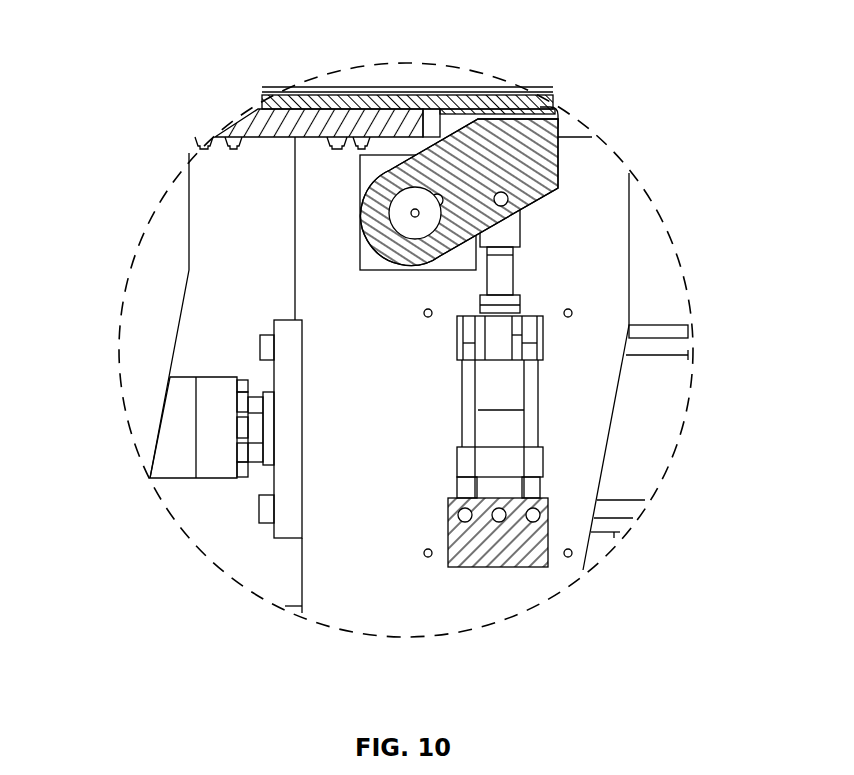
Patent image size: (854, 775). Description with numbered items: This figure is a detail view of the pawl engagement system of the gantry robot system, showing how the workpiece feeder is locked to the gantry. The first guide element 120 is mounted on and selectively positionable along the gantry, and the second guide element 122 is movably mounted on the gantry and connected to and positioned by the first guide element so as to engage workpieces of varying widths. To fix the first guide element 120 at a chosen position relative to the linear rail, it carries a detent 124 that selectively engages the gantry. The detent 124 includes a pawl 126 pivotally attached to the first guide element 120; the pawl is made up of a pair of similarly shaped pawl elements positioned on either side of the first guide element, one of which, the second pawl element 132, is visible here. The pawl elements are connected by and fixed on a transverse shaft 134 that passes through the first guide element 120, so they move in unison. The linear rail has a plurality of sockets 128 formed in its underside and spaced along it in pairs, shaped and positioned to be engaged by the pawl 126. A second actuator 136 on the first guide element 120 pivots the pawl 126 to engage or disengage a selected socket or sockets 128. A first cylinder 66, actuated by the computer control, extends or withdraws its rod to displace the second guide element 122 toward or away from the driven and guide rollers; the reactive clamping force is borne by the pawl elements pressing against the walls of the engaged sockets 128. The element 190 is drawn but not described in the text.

The first guide element 120 is at (413, 630).
The second guide element 122 is at (146, 247).
The detent 124 is at (610, 249).
The pawl 126 is at (540, 185).
The sockets 128 is at (508, 103).
The second pawl element 132 is at (535, 137).
The transverse shaft 134 is at (413, 213).
The second actuator 136 is at (487, 410).
The roller 190 is at (552, 122).
The first cylinder 66 is at (664, 440).